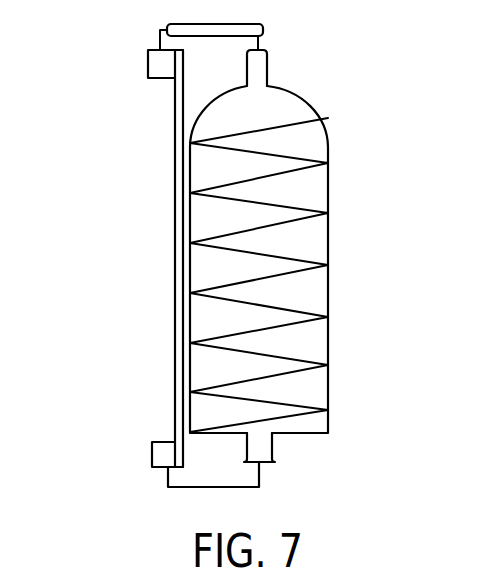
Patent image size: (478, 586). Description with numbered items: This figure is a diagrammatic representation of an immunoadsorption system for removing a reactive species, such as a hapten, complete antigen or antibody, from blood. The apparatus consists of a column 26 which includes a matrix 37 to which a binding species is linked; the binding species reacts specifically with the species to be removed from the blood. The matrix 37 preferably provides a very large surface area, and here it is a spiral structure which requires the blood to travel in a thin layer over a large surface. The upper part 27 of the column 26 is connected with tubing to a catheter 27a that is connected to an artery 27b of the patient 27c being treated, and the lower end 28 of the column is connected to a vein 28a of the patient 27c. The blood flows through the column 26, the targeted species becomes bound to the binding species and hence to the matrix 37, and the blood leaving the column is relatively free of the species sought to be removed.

The column 26 is at (302, 260).
The upper part of the column 27 is at (260, 83).
The catheter 27a is at (263, 30).
The artery 27b is at (148, 62).
The patient 27c is at (116, 258).
The lower end of the column 28 is at (273, 447).
The vein 28a is at (152, 450).
The matrix 37 is at (302, 158).